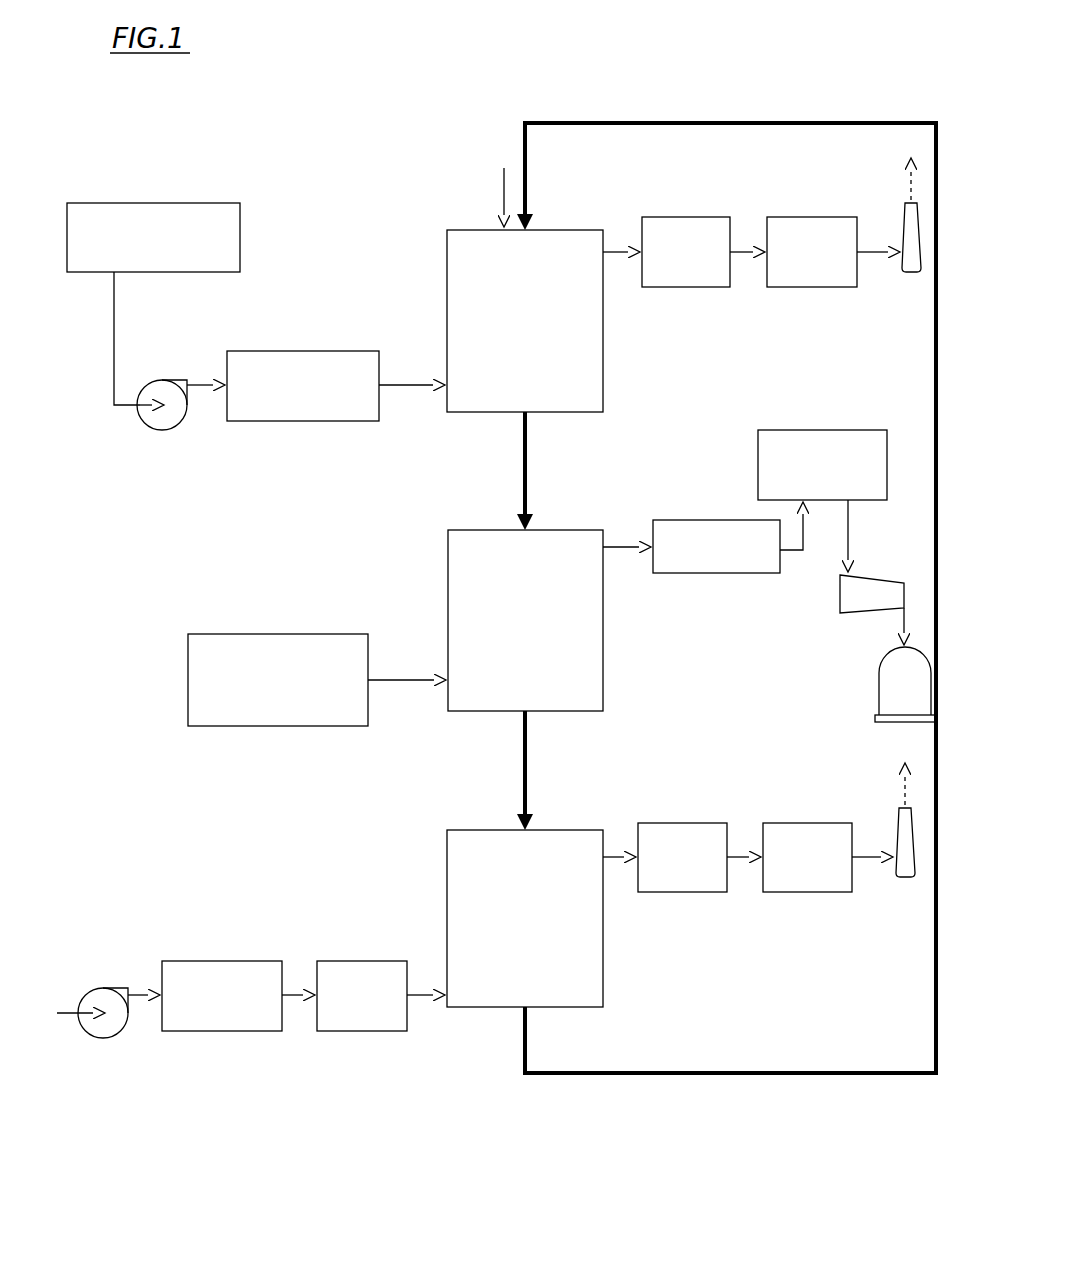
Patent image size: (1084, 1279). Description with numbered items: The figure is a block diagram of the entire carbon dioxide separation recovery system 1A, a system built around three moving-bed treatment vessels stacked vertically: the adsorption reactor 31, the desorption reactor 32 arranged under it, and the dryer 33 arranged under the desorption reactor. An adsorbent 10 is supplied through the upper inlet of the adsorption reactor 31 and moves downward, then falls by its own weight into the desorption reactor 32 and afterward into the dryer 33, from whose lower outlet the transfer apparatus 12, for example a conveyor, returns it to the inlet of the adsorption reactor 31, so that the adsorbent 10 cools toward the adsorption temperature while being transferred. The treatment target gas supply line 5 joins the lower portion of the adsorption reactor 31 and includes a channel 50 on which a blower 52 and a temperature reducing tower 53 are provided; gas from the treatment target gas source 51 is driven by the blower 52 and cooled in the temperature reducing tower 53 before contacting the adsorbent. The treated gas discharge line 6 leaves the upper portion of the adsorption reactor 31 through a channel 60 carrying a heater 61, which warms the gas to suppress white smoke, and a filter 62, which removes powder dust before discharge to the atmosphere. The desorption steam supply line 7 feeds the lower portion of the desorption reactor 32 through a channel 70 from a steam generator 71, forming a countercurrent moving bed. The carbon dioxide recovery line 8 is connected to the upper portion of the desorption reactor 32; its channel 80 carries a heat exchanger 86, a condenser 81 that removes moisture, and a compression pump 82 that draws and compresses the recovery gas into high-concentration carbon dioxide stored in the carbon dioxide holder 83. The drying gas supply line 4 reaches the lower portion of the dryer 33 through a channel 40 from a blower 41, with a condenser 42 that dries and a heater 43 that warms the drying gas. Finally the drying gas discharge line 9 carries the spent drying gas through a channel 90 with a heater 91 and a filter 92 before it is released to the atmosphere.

The carbon dioxide separation recovery system 1A is at (493, 88).
The adsorbent 10 is at (500, 188).
The transfer apparatus 12 is at (666, 1076).
The adsorption reactor 31 is at (606, 388).
The desorption reactor 32 is at (606, 688).
The dryer 33 is at (604, 983).
The treatment target gas supply line 5 is at (352, 322).
The treatment target gas source 51 is at (140, 202).
The blower 52 is at (168, 430).
The temperature reducing tower 53 is at (316, 422).
The channel 50 is at (394, 388).
The treated gas discharge line 6 is at (741, 296).
The channel 60 is at (614, 247).
The heater 61 is at (668, 216).
The filter 62 is at (806, 216).
The carbon dioxide recovery line 8 is at (733, 472).
The channel 80 is at (620, 545).
The condenser 81 is at (826, 429).
The compression pump 82 is at (882, 574).
The carbon dioxide holder 83 is at (878, 677).
The heat exchanger 86 is at (728, 574).
The desorption steam supply line 7 is at (344, 616).
The channel 70 is at (398, 683).
The steam generator 71 is at (258, 728).
The drying gas supply line 4 is at (344, 930).
The channel 40 is at (420, 998).
The blower 41 is at (102, 1038).
The condenser 42 is at (236, 1033).
The heater 43 is at (348, 1033).
The drying gas discharge line 9 is at (742, 903).
The channel 90 is at (614, 852).
The heater 91 is at (666, 822).
The filter 92 is at (806, 822).